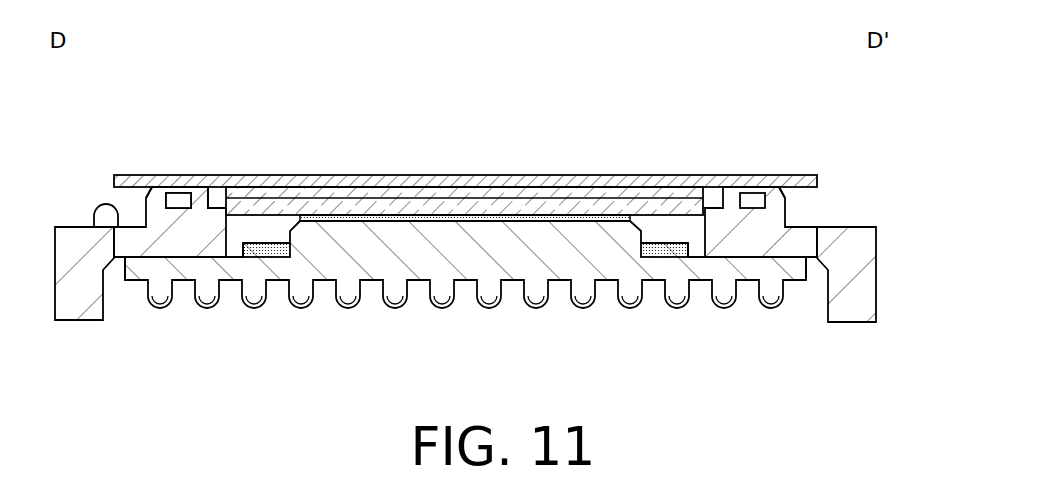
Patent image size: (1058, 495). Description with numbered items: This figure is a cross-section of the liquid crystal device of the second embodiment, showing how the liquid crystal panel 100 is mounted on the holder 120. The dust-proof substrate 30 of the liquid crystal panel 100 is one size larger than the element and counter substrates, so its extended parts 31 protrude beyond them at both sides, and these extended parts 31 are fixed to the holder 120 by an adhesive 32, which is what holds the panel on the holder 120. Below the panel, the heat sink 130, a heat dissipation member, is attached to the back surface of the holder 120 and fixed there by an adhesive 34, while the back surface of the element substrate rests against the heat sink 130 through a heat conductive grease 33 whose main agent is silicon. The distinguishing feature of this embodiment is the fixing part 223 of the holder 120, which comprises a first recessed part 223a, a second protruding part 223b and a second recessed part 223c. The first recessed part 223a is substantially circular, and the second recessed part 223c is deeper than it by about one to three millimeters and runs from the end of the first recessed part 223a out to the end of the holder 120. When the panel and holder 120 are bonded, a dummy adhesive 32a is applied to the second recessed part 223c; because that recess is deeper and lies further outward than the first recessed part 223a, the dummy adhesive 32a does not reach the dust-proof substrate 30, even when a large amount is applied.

The dust-proof substrate 30 is at (820, 181).
The liquid crystal panel 100 is at (470, 172).
The heat conductive grease 33 is at (560, 223).
The heat sink 130 is at (474, 289).
The adhesive 34 is at (280, 258).
The adhesive 32 is at (233, 195).
The dummy adhesive 32a is at (107, 222).
The holder 120 is at (878, 262).
The fixing part 223 is at (55, 227).
The first recessed part 223a is at (160, 198).
The second protruding part 223b is at (190, 196).
The second recessed part 223c is at (73, 226).
The extended parts 31 is at (114, 187).